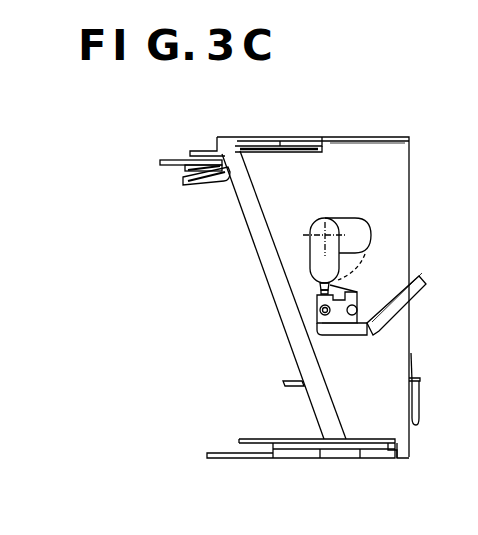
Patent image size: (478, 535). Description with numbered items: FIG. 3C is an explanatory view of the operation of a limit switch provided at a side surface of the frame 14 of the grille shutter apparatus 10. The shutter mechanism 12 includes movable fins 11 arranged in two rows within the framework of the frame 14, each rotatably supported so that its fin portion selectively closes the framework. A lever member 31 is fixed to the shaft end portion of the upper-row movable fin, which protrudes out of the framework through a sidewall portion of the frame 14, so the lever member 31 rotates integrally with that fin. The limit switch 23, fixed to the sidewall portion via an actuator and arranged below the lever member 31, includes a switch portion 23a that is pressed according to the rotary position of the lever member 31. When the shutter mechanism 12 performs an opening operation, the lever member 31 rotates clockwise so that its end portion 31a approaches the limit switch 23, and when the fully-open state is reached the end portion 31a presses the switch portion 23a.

The grille shutter apparatus 10 is at (196, 133).
The movable fins 11 is at (285, 384).
The shutter mechanism 12 is at (279, 319).
The frame 14 is at (243, 204).
The limit switch 23 is at (345, 335).
The switch portion 23a is at (322, 292).
The lever member 31 is at (312, 251).
The end portion 31a is at (317, 269).